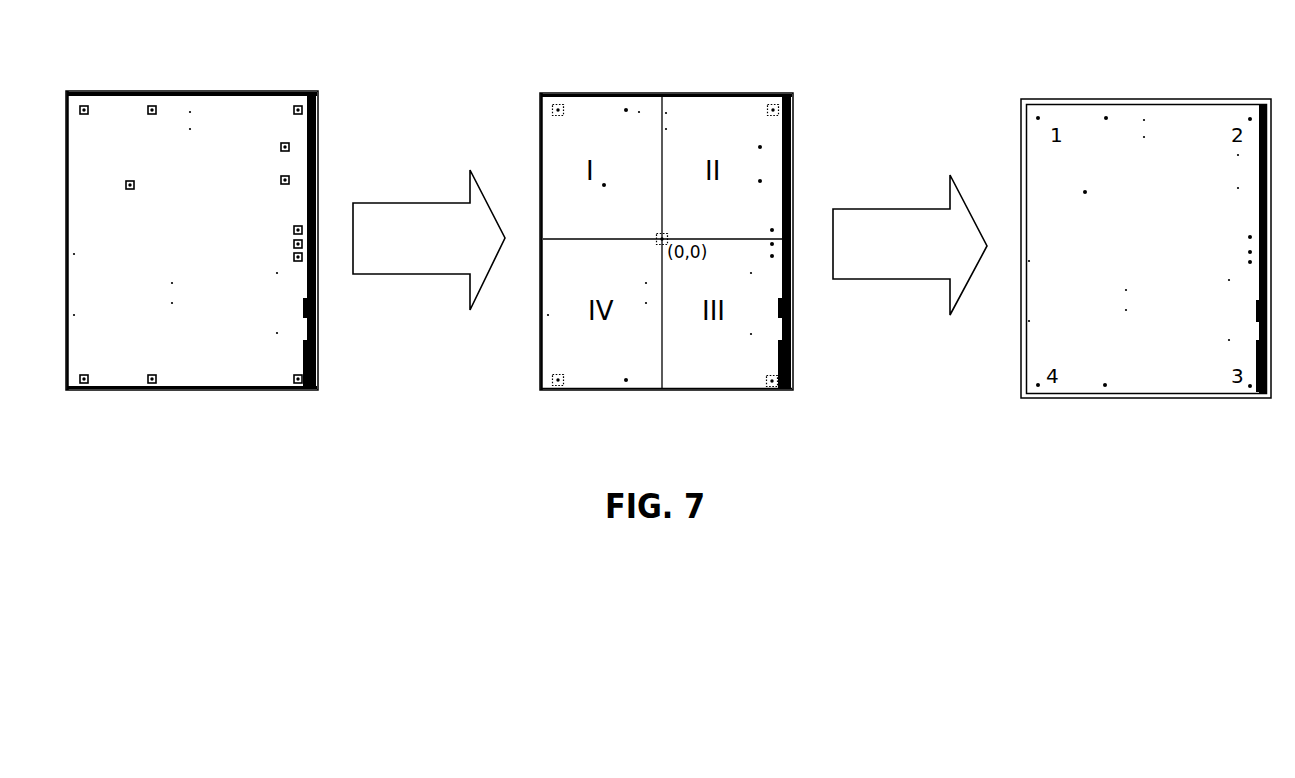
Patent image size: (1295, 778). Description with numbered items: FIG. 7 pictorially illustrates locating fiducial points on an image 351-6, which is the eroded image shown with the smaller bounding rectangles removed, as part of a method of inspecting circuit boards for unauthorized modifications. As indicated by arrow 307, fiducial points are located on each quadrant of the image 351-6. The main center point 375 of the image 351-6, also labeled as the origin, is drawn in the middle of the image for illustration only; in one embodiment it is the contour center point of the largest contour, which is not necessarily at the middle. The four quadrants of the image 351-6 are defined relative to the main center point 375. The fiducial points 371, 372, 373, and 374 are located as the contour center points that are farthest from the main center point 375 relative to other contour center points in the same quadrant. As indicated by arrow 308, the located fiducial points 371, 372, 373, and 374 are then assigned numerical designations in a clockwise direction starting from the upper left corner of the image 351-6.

The image 351-6 is at (211, 92).
The fiducial point 371 is at (558, 103).
The fiducial point 372 is at (773, 103).
The fiducial point 373 is at (766, 387).
The fiducial point 374 is at (556, 386).
The main center point 375 is at (660, 235).
The arrow 307 is at (432, 248).
The arrow 308 is at (916, 254).